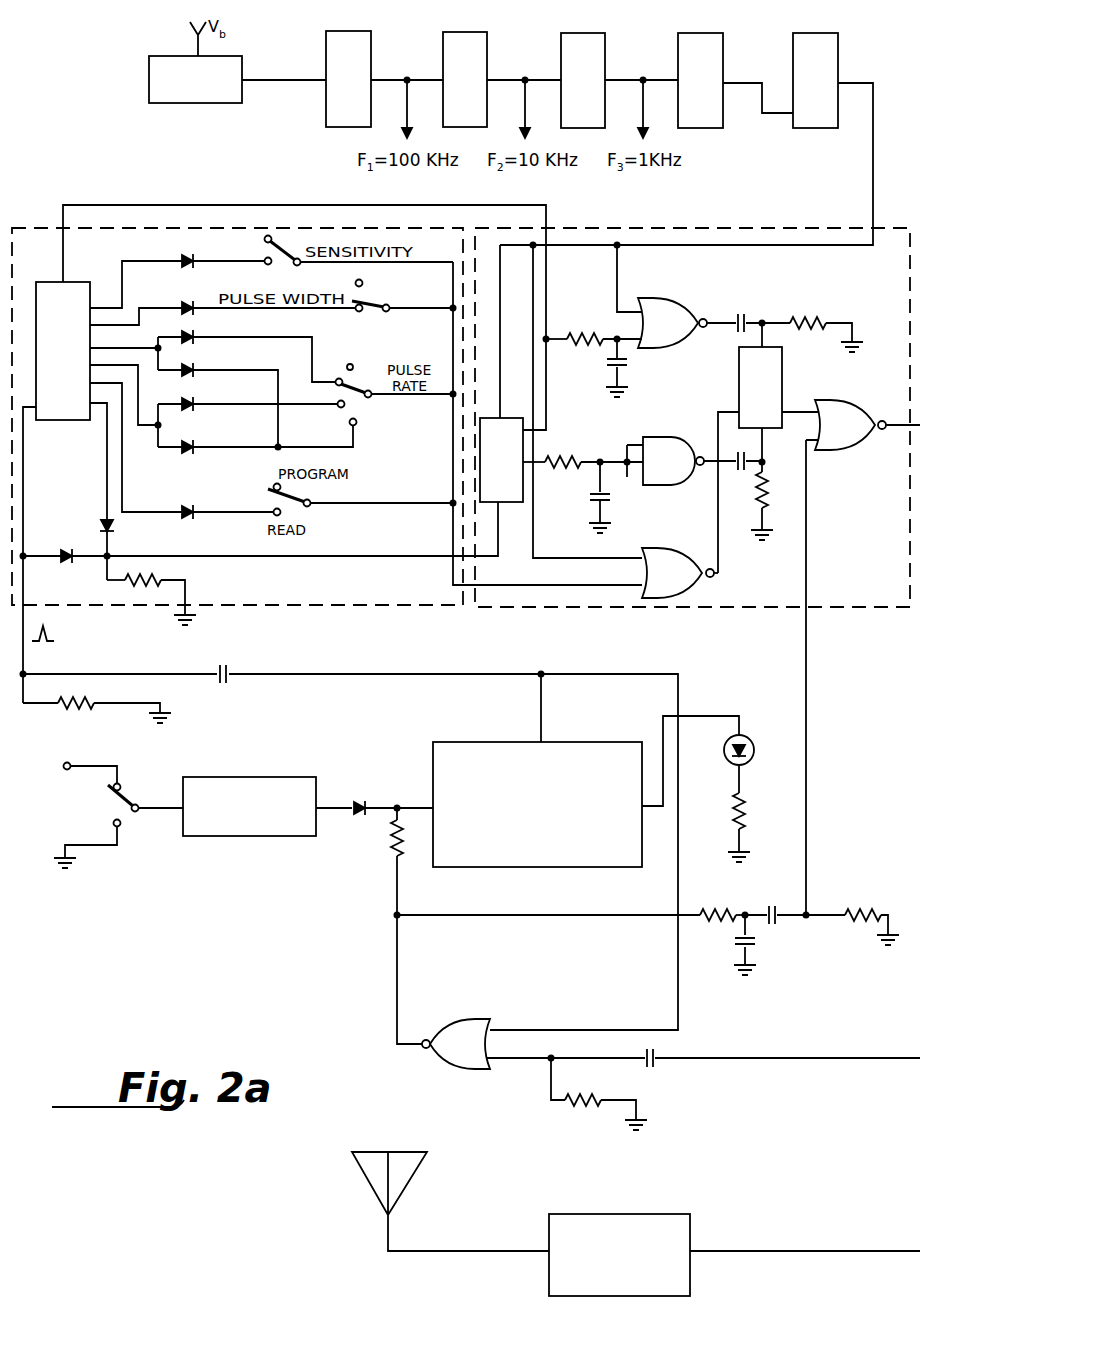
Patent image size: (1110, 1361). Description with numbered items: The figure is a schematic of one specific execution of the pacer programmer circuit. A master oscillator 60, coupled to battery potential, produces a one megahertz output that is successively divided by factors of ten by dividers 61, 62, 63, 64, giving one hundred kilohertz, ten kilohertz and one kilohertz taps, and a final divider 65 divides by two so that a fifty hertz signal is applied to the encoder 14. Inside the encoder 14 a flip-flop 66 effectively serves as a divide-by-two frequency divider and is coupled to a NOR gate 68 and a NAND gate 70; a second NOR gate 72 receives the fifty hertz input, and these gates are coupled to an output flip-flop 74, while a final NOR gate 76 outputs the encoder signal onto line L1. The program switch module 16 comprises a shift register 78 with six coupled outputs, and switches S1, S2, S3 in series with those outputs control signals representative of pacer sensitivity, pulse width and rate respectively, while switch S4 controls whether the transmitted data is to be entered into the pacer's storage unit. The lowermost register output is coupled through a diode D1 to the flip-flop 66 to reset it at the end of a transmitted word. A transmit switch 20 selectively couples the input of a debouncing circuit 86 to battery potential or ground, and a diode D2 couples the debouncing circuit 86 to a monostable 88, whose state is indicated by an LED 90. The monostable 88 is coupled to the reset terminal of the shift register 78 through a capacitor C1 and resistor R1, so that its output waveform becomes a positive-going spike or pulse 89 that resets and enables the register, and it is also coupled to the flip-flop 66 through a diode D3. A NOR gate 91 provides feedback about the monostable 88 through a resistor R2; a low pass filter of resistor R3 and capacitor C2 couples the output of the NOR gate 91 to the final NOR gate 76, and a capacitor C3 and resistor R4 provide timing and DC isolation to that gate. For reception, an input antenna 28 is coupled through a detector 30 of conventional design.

The master oscillator 60 is at (160, 82).
The divider 61 is at (375, 50).
The divider 62 is at (473, 48).
The divider 63 is at (592, 48).
The divider 64 is at (712, 48).
The final divider 65 is at (828, 45).
The program switch module 16 is at (38, 222).
The encoder 14 is at (845, 610).
The shift register 78 is at (71, 410).
The flip-flop 66 is at (510, 426).
The NOR gate 68 is at (660, 312).
The NAND gate 70 is at (672, 440).
The second NOR gate 72 is at (672, 556).
The output flip-flop 74 is at (739, 368).
The final NOR gate 76 is at (850, 436).
The positive-going spike or pulse 89 is at (54, 636).
The debouncing circuit 86 is at (252, 782).
The monostable 88 is at (487, 755).
The LED 90 is at (748, 738).
The NOR gate 91 is at (458, 1020).
The transmit switch 20 is at (115, 806).
The input antenna 28 is at (360, 1175).
The detector 30 is at (660, 1218).
The switch S1 is at (323, 251).
The switch S2 is at (323, 296).
The switch S3 is at (323, 392).
The switch S4 is at (323, 496).
The diode D1 is at (101, 528).
The diode D2 is at (358, 800).
The diode D3 is at (61, 562).
The capacitor C1 is at (232, 672).
The capacitor C2 is at (758, 952).
The capacitor C3 is at (764, 910).
The resistor R1 is at (75, 708).
The resistor R2 is at (388, 848).
The resistor R3 is at (701, 912).
The resistor R4 is at (852, 912).
The line L1 is at (808, 762).